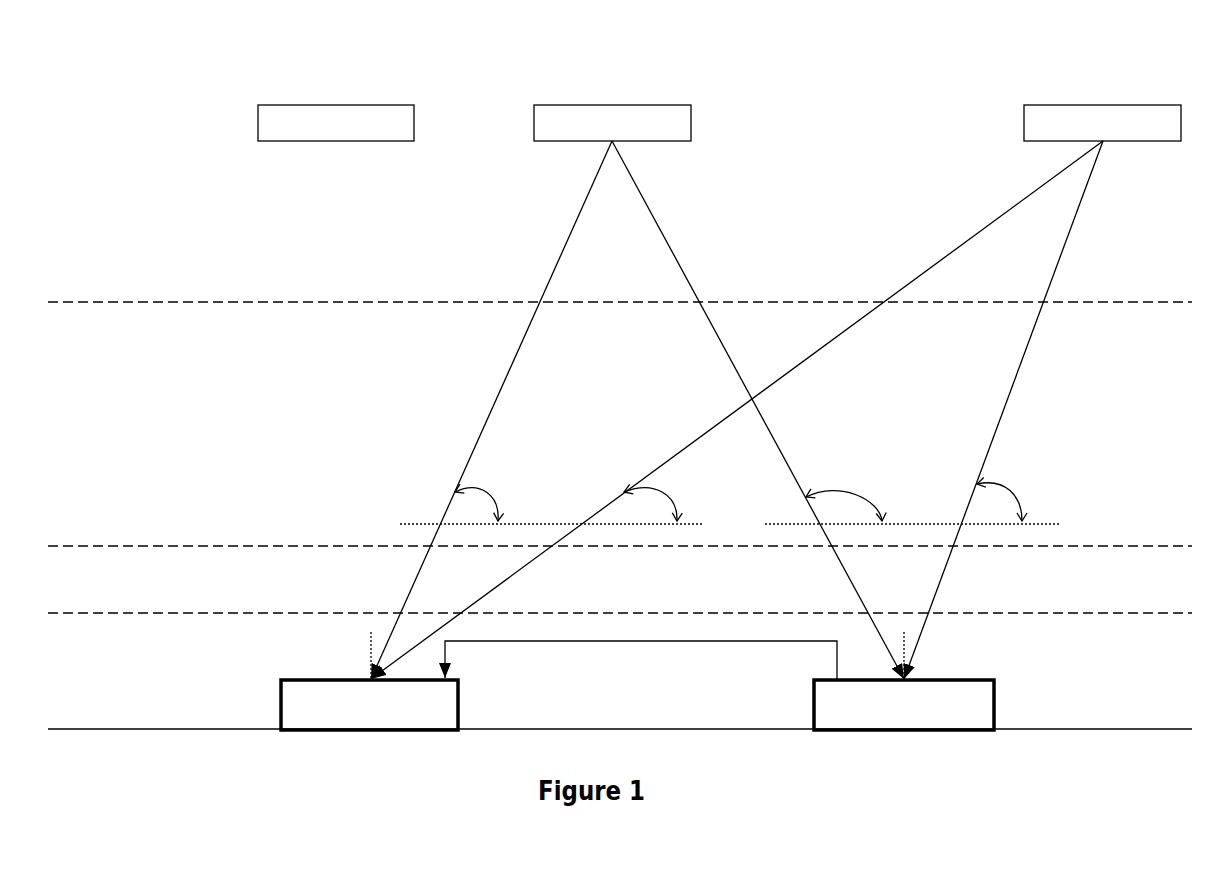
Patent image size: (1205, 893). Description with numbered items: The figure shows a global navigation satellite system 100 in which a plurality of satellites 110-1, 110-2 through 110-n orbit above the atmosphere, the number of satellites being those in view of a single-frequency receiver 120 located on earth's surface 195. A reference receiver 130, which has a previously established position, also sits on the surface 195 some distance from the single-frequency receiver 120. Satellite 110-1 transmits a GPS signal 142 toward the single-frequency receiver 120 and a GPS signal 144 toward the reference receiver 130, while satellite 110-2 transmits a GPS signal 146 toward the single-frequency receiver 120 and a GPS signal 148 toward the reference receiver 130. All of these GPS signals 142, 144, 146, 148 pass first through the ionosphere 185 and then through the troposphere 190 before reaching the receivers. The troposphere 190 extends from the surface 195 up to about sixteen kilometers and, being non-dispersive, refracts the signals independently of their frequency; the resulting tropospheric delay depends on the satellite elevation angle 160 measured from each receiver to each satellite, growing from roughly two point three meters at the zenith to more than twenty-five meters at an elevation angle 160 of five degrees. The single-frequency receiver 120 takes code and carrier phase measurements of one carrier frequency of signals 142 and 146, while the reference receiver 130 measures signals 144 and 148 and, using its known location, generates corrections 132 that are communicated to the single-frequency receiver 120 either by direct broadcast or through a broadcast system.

The global navigation satellite system 100 is at (178, 132).
The satellite 110-n is at (376, 105).
The satellite 110-1 is at (653, 105).
The satellite 110-2 is at (1120, 105).
The single-frequency receiver 120 is at (369, 681).
The reference receiver 130 is at (904, 681).
The corrections 132 is at (529, 641).
The GPS signal 142 is at (580, 212).
The GPS signal 144 is at (656, 213).
The GPS signal 146 is at (1006, 210).
The GPS signal 148 is at (1080, 208).
The satellite elevation angle 160 is at (482, 492).
The ionosphere 185 is at (620, 424).
The troposphere 190 is at (620, 643).
The earth's surface 195 is at (168, 729).